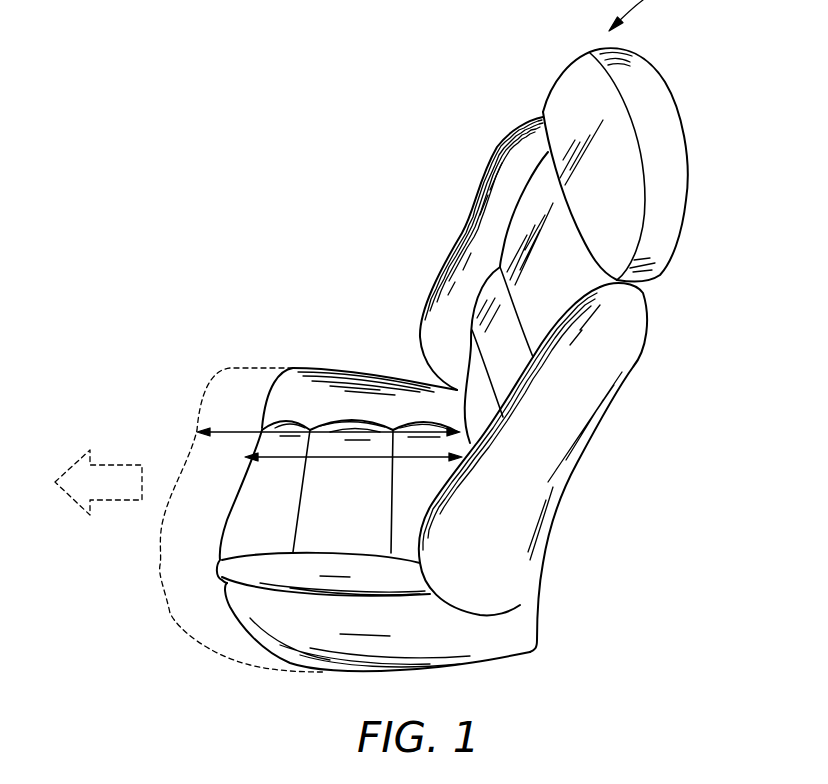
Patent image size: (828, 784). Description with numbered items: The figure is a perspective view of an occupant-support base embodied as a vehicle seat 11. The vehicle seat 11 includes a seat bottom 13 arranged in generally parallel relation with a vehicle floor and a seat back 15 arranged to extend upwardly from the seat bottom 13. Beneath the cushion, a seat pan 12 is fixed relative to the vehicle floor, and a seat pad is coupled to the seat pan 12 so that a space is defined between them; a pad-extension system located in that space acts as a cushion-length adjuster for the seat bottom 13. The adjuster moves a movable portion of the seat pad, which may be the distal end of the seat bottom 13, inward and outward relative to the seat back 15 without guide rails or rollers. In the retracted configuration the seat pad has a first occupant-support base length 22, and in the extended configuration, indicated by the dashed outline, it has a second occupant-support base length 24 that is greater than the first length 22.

The vehicle seat 11 is at (340, 163).
The seat pan 12 is at (238, 540).
The seat bottom 13 is at (373, 360).
The seat back 15 is at (470, 167).
The first occupant-support base length 22 is at (352, 457).
The second occupant-support base length 24 is at (247, 430).